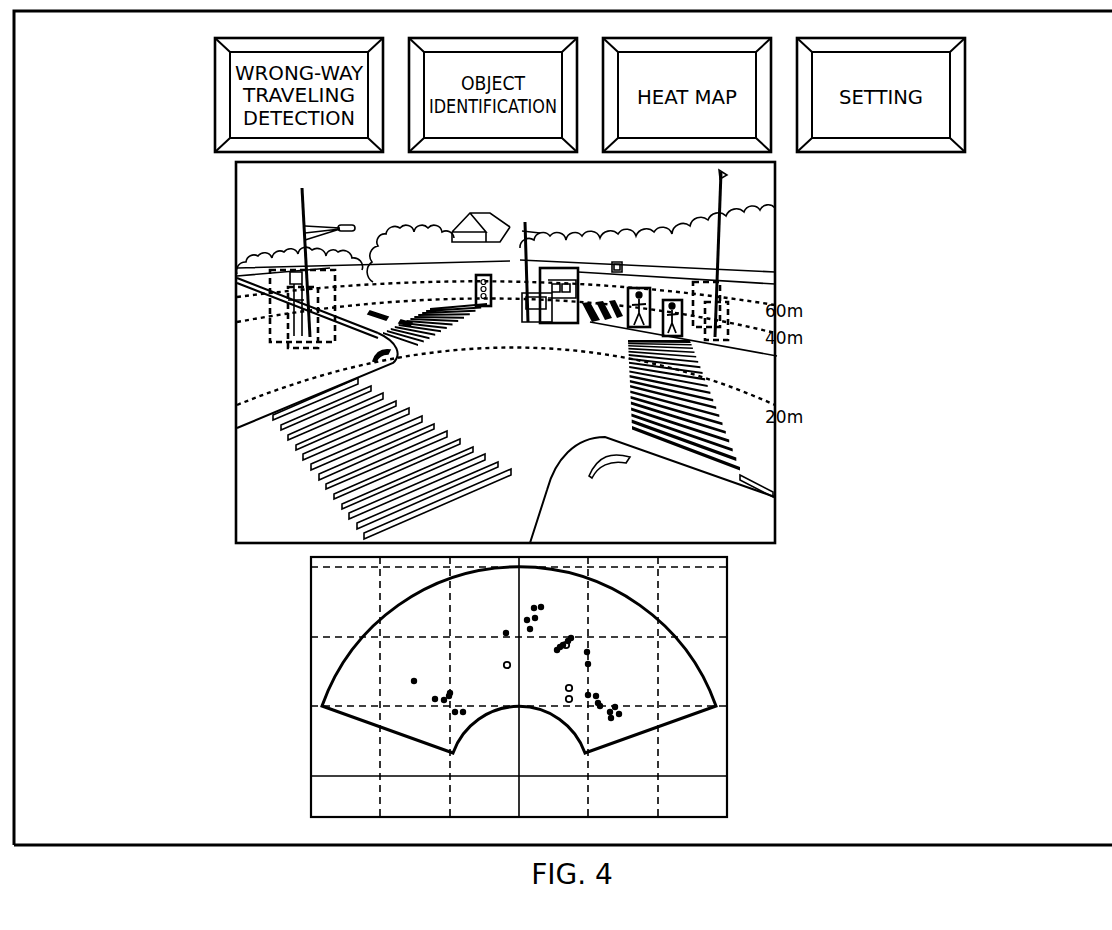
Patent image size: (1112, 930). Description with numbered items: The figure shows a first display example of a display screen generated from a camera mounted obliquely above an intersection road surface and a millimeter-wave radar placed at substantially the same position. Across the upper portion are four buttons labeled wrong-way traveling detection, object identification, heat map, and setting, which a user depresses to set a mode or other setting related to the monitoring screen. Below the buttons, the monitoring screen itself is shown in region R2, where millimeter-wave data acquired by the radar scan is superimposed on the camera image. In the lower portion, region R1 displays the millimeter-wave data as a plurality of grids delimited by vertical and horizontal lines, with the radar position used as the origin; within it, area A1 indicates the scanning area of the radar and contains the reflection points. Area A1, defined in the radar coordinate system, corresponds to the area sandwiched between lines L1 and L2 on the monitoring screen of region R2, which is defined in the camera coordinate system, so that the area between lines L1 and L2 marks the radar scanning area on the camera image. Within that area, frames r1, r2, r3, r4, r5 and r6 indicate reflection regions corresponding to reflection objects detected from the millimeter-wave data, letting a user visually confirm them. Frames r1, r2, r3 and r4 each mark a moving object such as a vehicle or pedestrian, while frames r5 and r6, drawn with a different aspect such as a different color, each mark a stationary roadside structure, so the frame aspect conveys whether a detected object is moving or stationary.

The region R1 is at (551, 687).
The region R2 is at (777, 188).
The area A1 is at (667, 630).
The line L1 is at (243, 402).
The line L2 is at (243, 298).
The frame r1 is at (566, 267).
The frame r2 is at (632, 289).
The frame r3 is at (668, 300).
The frame r4 is at (485, 275).
The frame r5 is at (717, 303).
The frame r6 is at (291, 271).